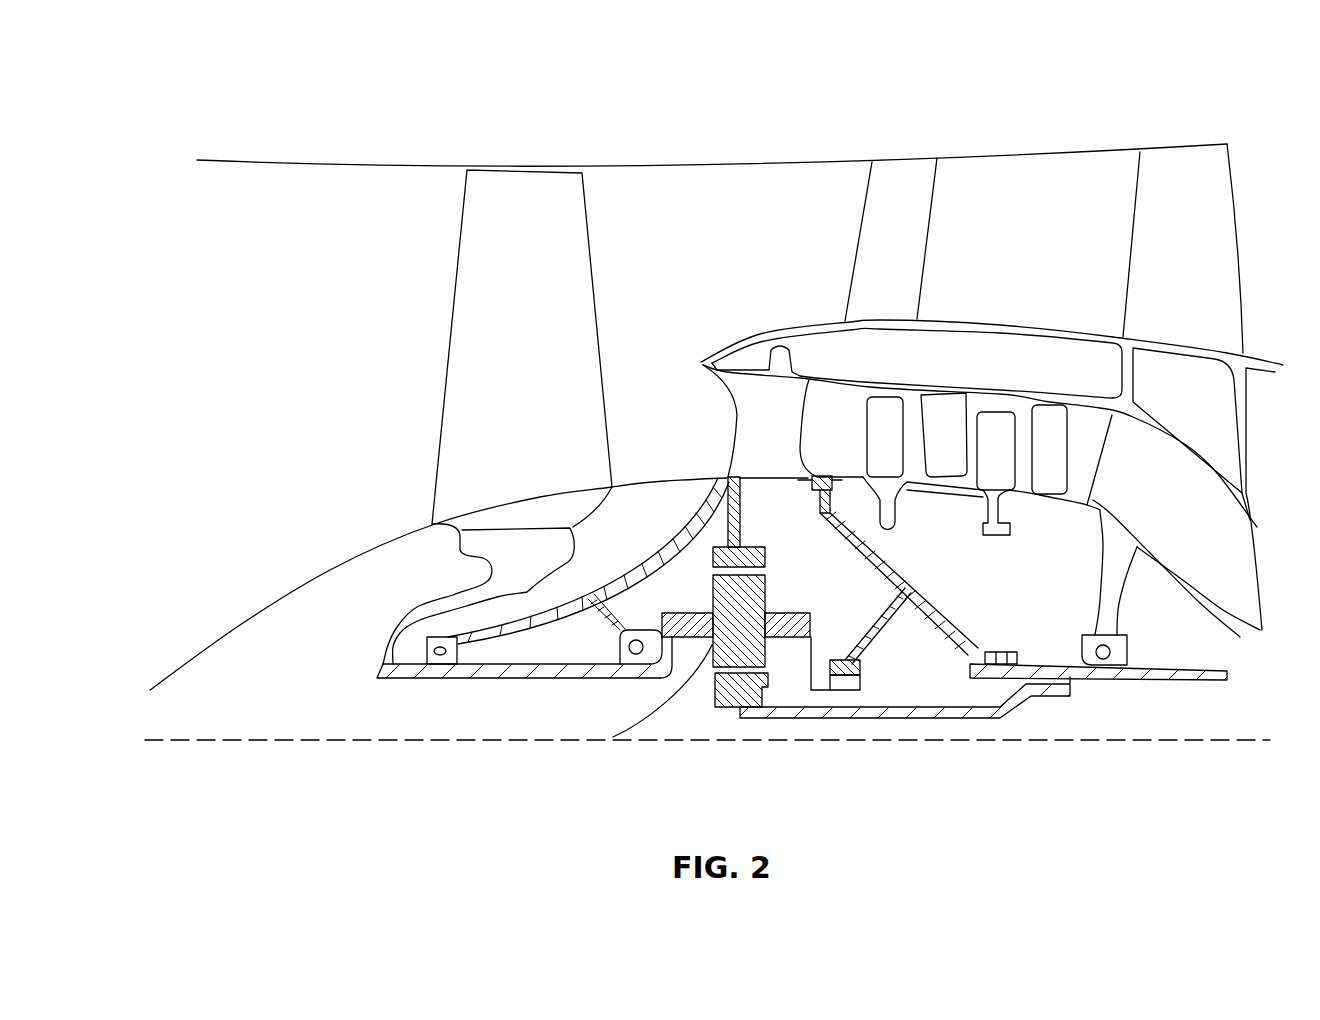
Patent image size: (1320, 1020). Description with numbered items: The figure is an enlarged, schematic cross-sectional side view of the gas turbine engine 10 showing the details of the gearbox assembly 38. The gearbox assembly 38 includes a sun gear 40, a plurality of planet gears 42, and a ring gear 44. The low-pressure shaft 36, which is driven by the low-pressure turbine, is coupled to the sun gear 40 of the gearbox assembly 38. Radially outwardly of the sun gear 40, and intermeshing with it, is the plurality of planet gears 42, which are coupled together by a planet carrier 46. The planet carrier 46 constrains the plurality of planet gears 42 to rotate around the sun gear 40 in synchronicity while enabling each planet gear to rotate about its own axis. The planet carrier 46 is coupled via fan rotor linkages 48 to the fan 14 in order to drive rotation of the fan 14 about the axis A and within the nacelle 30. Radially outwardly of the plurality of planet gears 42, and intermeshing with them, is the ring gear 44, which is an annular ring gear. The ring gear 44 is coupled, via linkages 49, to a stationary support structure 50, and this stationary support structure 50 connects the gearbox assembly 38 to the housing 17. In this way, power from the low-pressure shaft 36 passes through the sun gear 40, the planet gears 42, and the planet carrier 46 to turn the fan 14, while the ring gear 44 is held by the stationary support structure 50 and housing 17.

The gas turbine engine 10 is at (186, 100).
The nacelle 30 is at (713, 163).
The fan 14 is at (456, 299).
The housing 17 is at (948, 318).
The stationary support structure 50 is at (735, 412).
The gearbox assembly 38 is at (695, 553).
The linkages 49 is at (742, 515).
The ring gear 44 is at (765, 557).
The plurality of planet gears 42 is at (708, 648).
The planet carrier 46 is at (710, 650).
The sun gear 40 is at (737, 710).
The fan rotor linkages 48 is at (478, 680).
The low-pressure shaft 36 is at (975, 718).
The axis A is at (1205, 741).